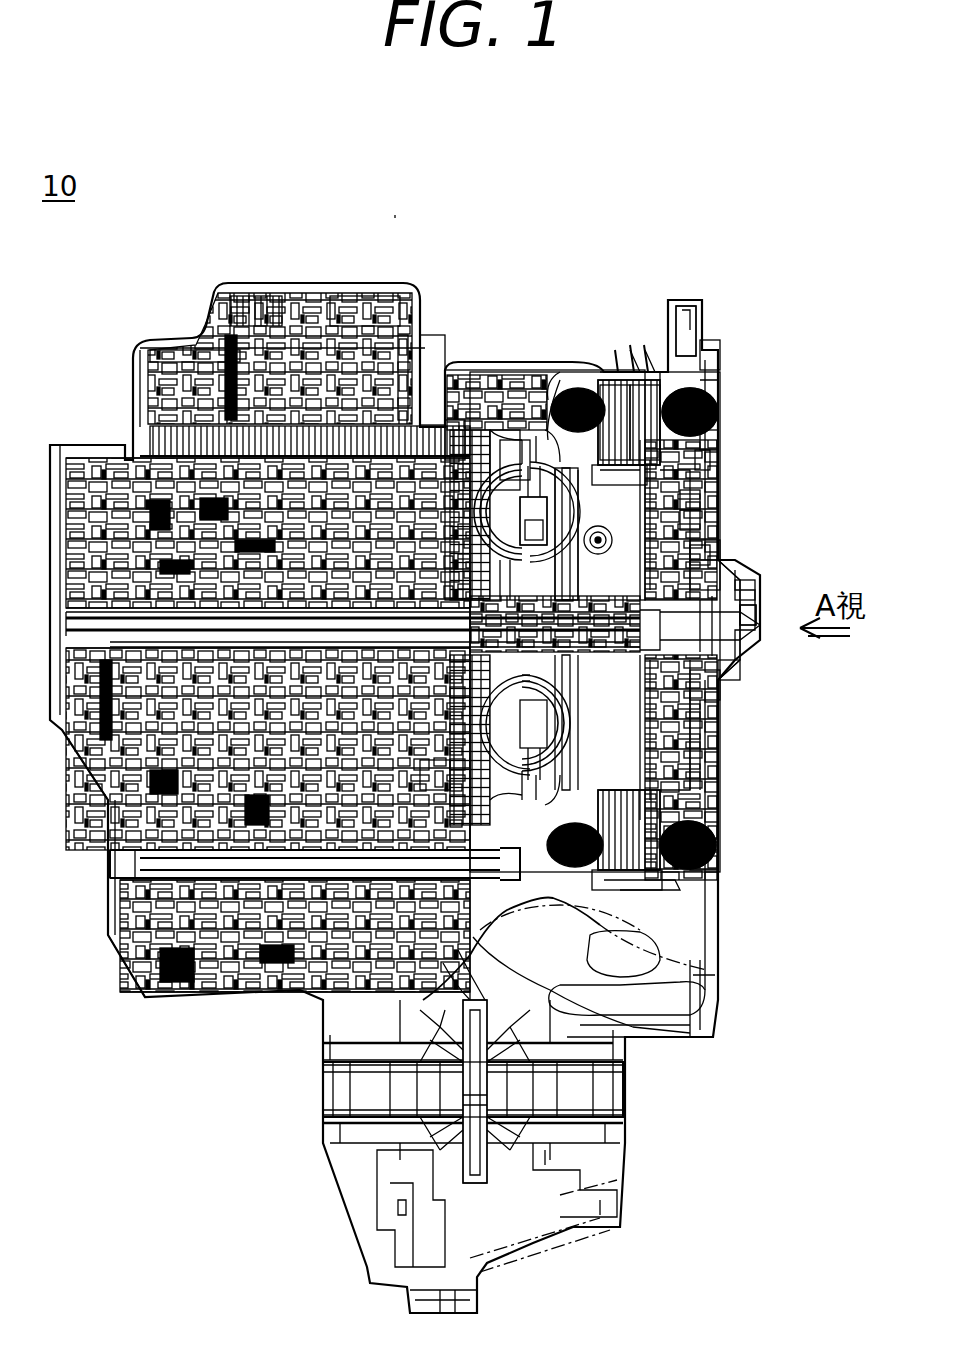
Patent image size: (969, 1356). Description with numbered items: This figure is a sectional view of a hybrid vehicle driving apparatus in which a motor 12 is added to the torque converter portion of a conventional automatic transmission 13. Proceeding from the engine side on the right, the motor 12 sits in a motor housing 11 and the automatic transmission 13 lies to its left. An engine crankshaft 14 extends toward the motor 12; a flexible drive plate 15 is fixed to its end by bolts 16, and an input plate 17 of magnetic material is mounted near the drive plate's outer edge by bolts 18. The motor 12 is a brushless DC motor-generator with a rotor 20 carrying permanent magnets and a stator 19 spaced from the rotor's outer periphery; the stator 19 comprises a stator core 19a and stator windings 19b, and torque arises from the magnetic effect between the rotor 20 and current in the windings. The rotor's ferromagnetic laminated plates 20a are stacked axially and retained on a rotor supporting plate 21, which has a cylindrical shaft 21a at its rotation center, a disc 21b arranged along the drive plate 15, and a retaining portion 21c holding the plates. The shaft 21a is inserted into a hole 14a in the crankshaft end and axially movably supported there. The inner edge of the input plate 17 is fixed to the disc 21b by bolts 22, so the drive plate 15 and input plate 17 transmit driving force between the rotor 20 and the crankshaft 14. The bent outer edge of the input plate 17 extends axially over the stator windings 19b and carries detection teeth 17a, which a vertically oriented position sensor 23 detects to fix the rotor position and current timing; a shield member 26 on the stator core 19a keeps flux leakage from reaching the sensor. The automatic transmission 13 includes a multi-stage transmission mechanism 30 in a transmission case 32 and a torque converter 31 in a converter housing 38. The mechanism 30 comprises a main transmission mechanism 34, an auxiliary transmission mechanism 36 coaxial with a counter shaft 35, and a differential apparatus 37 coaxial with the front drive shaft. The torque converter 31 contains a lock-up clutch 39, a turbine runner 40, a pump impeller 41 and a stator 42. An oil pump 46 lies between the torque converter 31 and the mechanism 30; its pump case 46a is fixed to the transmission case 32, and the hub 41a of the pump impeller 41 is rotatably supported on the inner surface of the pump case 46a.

The motor housing 11 is at (566, 372).
The motor 12 is at (690, 298).
The automatic transmission 13 is at (525, 215).
The engine crankshaft 14 is at (745, 575).
The hole 14a is at (740, 668).
The flexible drive plate 15 is at (698, 520).
The bolts 16 is at (700, 556).
The input plate 17 is at (690, 500).
The detection teeth 17a is at (712, 862).
The bolts 18 is at (705, 460).
The stator 19 is at (678, 282).
The stator core 19a is at (622, 400).
The stator windings 19b is at (655, 405).
The rotor 20 is at (676, 446).
The laminated plates 20a is at (665, 795).
The rotor supporting plate 21 is at (690, 552).
The cylindrical shaft 21a is at (740, 640).
The disc 21b is at (735, 590).
The retaining portion 21c is at (708, 440).
The bolts 22 is at (695, 760).
The position sensor 23 is at (705, 348).
The shield member 26 is at (720, 836).
The multi-stage transmission mechanism 30 is at (390, 283).
The torque converter 31 is at (537, 386).
The transmission case 32 is at (432, 420).
The main transmission mechanism 34 is at (110, 735).
The counter shaft 35 is at (120, 882).
The auxiliary transmission mechanism 36 is at (125, 950).
The differential apparatus 37 is at (326, 1104).
The converter housing 38 is at (560, 380).
The lock-up clutch 39 is at (585, 450).
The turbine runner 40 is at (545, 430).
The pump impeller 41 is at (515, 440).
The hub 41a is at (425, 785).
The stator 42 is at (525, 520).
The oil pump 46 is at (450, 418).
The pump case 46a is at (505, 440).